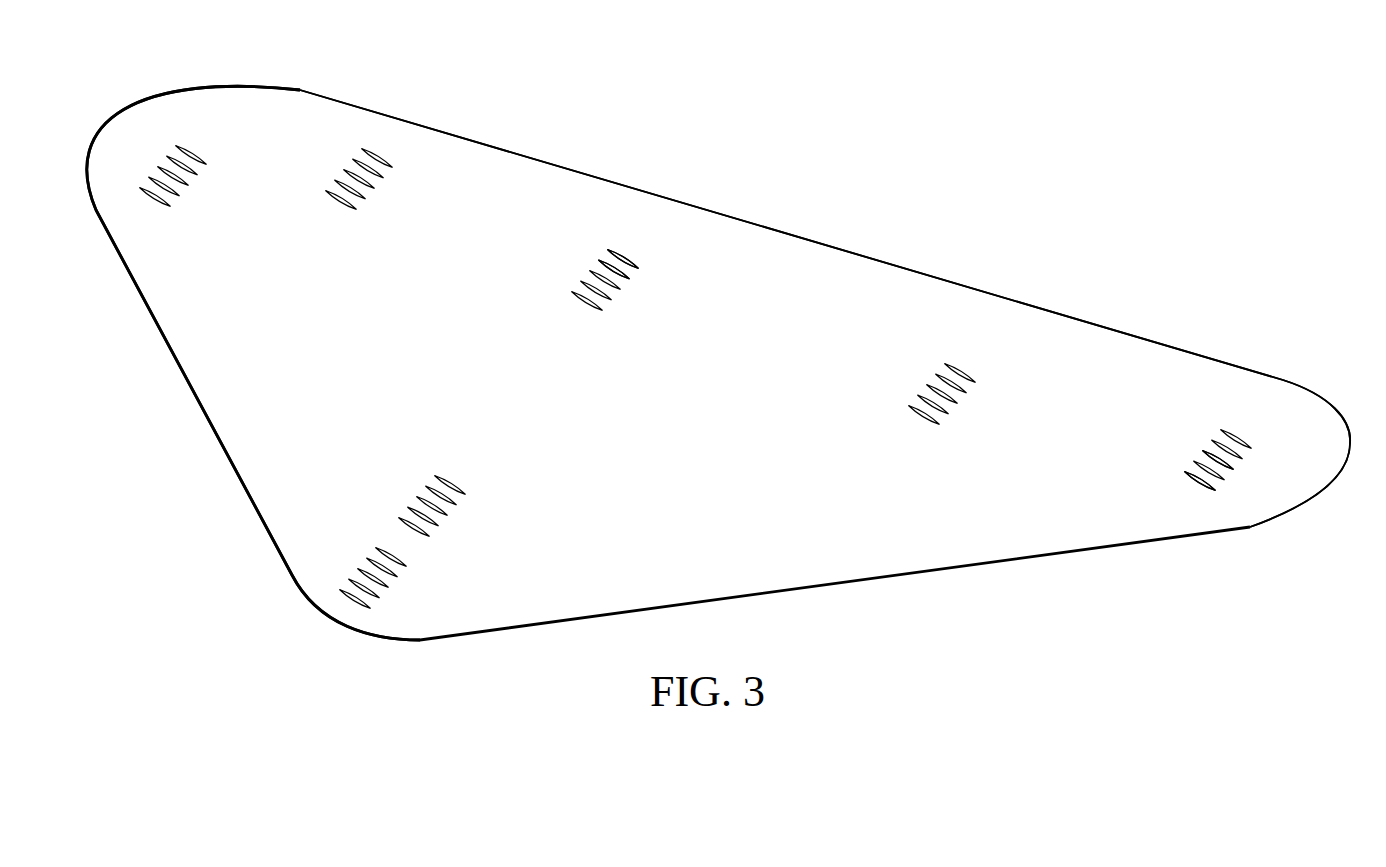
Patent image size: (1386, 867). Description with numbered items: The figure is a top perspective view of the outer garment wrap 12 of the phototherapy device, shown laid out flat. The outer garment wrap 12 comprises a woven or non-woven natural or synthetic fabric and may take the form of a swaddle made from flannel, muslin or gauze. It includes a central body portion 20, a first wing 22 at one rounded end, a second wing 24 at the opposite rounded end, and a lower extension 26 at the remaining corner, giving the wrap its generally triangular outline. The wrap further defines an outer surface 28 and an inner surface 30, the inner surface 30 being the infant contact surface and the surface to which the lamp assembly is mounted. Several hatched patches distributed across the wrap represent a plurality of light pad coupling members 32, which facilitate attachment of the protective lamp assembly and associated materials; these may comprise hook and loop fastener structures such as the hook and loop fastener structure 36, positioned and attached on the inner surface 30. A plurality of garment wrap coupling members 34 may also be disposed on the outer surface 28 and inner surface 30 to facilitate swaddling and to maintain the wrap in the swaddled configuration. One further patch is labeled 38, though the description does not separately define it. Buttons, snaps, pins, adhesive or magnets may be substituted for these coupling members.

The outer garment wrap 12 is at (1068, 303).
The central body portion 20 is at (632, 250).
The first wing 22 is at (291, 123).
The second wing 24 is at (1245, 423).
The lower extension 26 is at (327, 555).
The outer surface 28 is at (190, 400).
The inner surface 30 is at (500, 168).
The light pad coupling members 32 is at (635, 282).
The garment wrap coupling members 34 is at (1192, 480).
The hook and loop fastener structure 36 is at (608, 251).
The slot 38 is at (1235, 472).